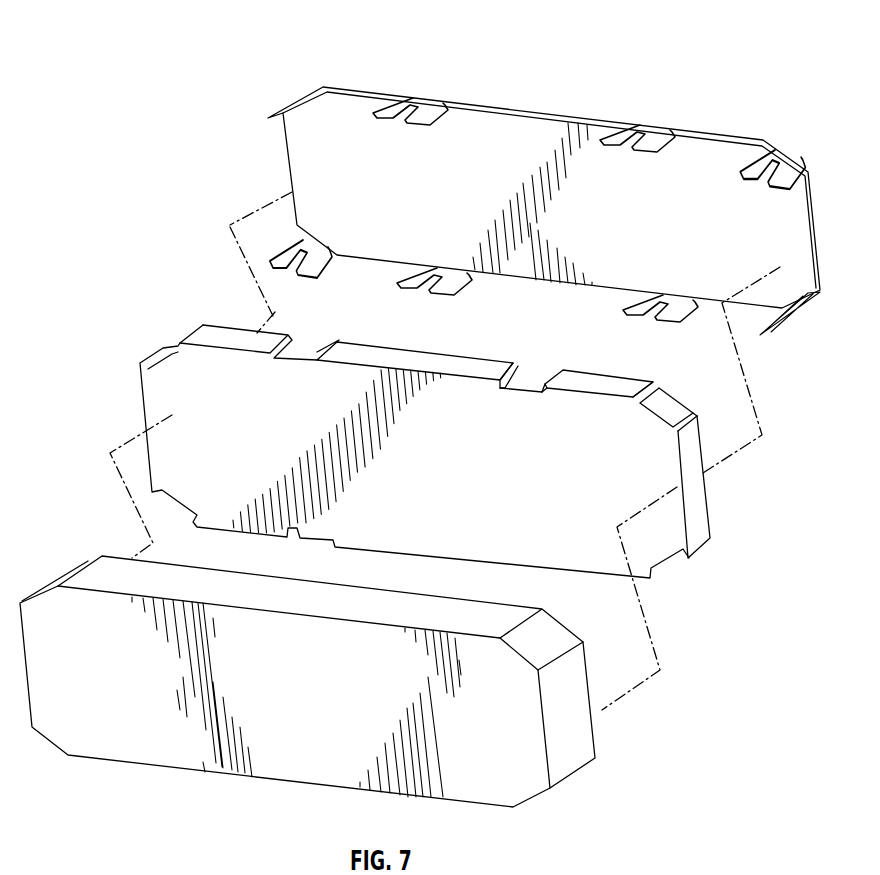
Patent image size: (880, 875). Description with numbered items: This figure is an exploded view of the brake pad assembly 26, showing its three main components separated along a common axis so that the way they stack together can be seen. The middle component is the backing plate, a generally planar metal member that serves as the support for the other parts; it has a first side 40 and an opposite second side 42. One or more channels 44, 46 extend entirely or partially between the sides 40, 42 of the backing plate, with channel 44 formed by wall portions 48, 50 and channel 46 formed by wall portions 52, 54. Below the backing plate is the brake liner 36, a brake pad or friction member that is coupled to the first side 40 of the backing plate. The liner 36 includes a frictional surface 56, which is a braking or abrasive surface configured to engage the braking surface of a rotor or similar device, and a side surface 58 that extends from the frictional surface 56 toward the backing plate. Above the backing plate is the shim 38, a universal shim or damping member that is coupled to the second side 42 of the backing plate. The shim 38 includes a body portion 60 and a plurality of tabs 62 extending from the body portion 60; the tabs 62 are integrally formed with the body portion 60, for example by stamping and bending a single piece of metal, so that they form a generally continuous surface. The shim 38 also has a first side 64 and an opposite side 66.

The brake pad assembly 26 is at (103, 110).
The brake liner 36 is at (605, 713).
The shim 38 is at (820, 172).
The first side 40 is at (455, 462).
The second side 42 is at (408, 346).
The channel 44 is at (530, 368).
The channel 46 is at (672, 401).
The wall portion 48 is at (510, 362).
The wall portion 50 is at (548, 381).
The wall portion 52 is at (652, 387).
The wall portion 54 is at (703, 407).
The frictional surface 56 is at (299, 704).
The side surface 58 is at (567, 755).
The body portion 60 is at (695, 170).
The tabs 62 is at (624, 127).
The first side 64 is at (425, 192).
The second side 66 is at (485, 106).